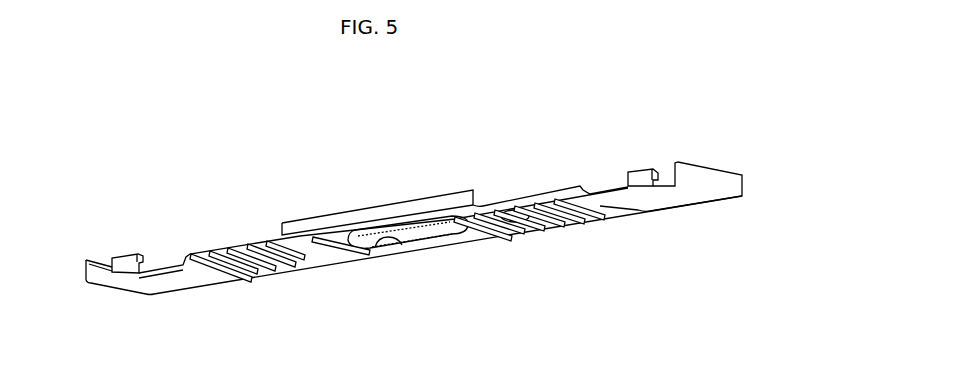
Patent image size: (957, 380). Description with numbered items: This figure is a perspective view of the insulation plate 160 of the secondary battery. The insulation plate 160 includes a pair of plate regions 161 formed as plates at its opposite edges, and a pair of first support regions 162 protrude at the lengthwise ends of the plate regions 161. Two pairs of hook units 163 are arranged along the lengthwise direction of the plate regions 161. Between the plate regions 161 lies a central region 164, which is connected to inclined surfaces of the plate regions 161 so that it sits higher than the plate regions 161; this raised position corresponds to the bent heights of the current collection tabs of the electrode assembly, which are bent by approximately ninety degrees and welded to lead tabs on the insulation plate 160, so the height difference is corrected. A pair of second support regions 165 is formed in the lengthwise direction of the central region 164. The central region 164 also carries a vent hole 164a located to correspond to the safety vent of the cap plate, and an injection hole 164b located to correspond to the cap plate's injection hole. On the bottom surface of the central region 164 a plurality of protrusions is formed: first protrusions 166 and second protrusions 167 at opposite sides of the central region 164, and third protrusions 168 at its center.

The insulation plate 160 is at (705, 122).
The plate regions 161 is at (207, 283).
The first support regions 162 is at (85, 267).
The hook units 163 is at (124, 258).
The central region 164 is at (548, 192).
The vent hole 164a is at (402, 244).
The injection hole 164b is at (538, 228).
The second support regions 165 is at (362, 213).
The first protrusions 166 is at (282, 270).
The second protrusions 167 is at (603, 215).
The third protrusions 168 is at (487, 238).